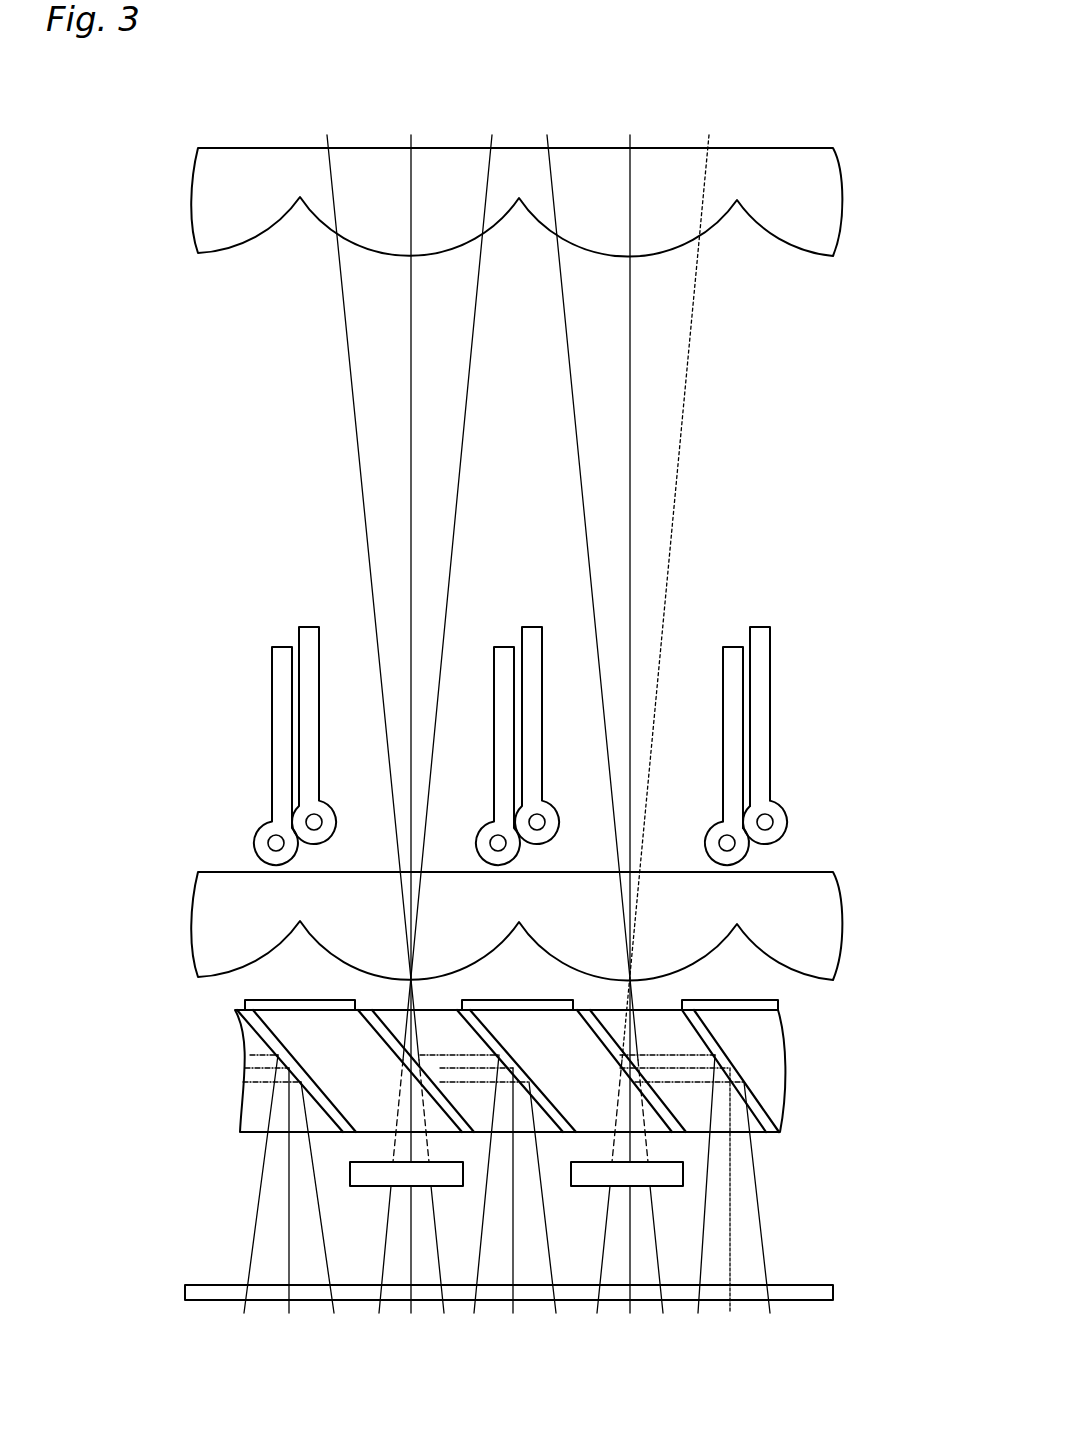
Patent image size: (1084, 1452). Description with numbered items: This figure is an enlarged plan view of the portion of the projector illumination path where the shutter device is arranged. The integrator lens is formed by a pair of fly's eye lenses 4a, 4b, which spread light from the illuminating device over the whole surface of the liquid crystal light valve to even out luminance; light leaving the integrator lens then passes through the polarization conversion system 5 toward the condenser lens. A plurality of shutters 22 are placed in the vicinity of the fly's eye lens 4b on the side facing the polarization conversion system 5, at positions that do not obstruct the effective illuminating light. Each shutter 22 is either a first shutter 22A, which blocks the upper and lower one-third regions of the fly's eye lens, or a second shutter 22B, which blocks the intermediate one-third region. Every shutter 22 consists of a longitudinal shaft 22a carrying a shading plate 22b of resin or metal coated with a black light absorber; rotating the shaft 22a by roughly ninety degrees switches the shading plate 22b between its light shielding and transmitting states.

The fly's eye lens 4a is at (833, 197).
The fly's eye lens 4b is at (834, 919).
The polarization conversion system 5 is at (780, 1057).
The shutter 22 is at (549, 746).
The first shutter 22A is at (520, 746).
The second shutter 22B is at (795, 763).
The shaft 22a is at (774, 822).
The shading plate 22b is at (723, 676).